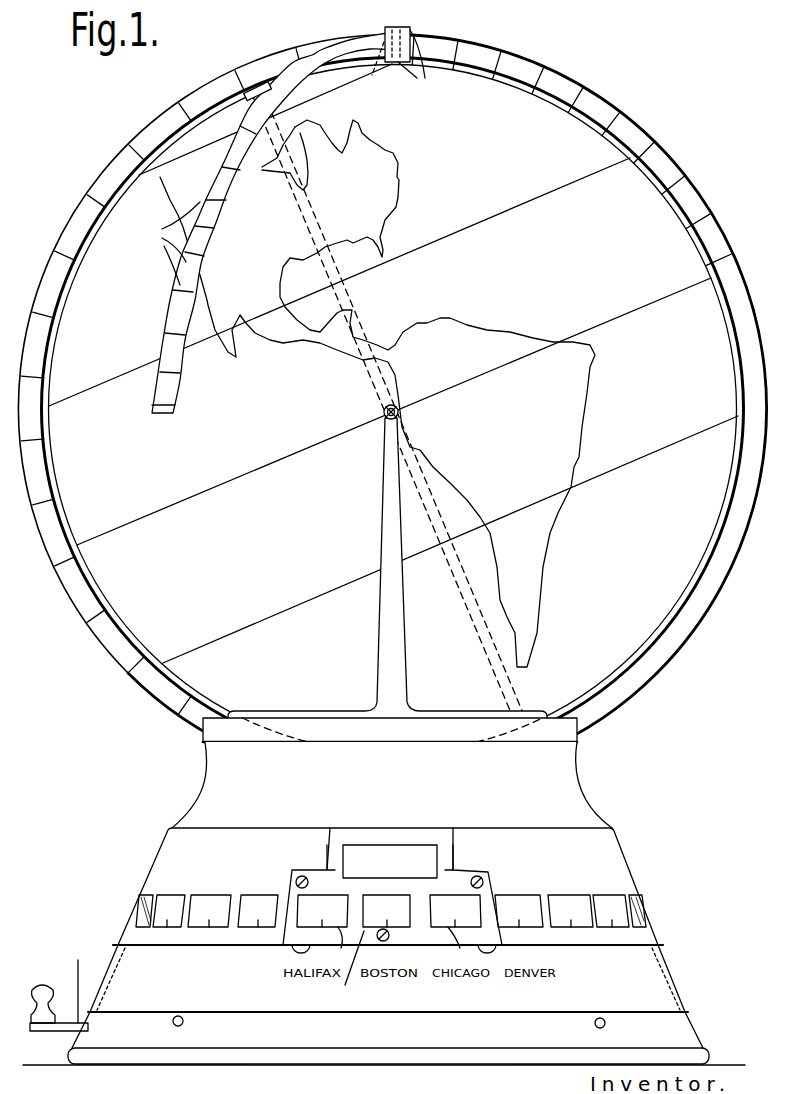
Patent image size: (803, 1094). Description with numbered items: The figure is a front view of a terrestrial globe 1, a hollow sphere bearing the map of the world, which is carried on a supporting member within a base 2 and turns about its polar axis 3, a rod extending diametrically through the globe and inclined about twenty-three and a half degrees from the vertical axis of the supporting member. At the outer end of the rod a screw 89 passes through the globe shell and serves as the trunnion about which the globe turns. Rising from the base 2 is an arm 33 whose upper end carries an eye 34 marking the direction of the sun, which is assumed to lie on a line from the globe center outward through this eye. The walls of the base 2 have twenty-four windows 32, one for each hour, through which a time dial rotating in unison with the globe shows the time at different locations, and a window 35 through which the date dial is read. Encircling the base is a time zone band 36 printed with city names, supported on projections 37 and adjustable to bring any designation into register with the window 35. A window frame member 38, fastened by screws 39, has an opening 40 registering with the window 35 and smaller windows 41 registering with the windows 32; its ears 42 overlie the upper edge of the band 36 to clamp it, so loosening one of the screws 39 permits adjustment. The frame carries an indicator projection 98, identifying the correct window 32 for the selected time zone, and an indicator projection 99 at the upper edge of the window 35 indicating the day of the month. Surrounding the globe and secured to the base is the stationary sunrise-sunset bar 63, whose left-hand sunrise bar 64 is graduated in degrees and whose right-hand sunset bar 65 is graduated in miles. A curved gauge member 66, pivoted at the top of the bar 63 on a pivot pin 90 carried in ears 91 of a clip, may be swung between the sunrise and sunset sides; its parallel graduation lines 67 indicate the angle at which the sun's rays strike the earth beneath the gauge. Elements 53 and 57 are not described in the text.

The terrestrial globe 1 is at (550, 130).
The base 2 is at (168, 853).
The polar axis 3 is at (343, 293).
The windows 32 is at (257, 892).
The arm 33 is at (388, 548).
The eye 34 is at (383, 410).
The window 35 is at (437, 840).
The time zone band 36 is at (355, 1007).
The projections 37 is at (173, 1023).
The window frame member 38 is at (447, 878).
The screws 39 is at (303, 876).
The opening 40 is at (338, 838).
The smaller windows 41 is at (391, 946).
The ears 42 is at (292, 950).
The rod 53 is at (60, 985).
The knob 57 is at (40, 987).
The sunrise-sunset bar 63 is at (466, 34).
The sunrise bar 64 is at (50, 262).
The sunset bar 65 is at (712, 222).
The gauge member 66 is at (213, 187).
The graduation lines 67 is at (168, 243).
The screw 89 is at (258, 86).
The pivot pin 90 is at (389, 64).
The ears 91 is at (420, 66).
The indicator projection 98 is at (338, 969).
The indicator projection 99 is at (398, 843).